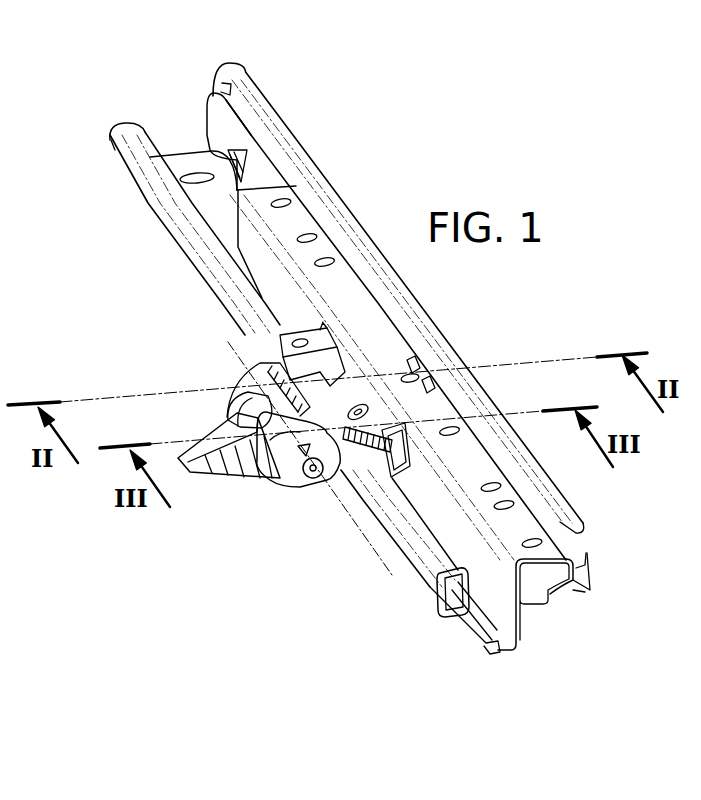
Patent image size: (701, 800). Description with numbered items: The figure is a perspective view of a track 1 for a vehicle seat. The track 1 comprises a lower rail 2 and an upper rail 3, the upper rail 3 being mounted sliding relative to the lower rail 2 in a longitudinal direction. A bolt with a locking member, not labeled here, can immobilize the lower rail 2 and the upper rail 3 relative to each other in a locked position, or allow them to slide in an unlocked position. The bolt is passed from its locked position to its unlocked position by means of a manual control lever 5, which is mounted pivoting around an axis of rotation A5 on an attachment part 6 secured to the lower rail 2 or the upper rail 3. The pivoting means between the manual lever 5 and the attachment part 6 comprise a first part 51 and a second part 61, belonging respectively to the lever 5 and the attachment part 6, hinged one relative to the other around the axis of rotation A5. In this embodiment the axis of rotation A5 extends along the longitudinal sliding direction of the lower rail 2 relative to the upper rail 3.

The track 1 is at (287, 92).
The lower rail 2 is at (534, 611).
The upper rail 3 is at (495, 593).
The manual control lever 5 is at (218, 482).
The first part 51 is at (297, 490).
The attachment part 6 is at (276, 337).
The second part 61 is at (317, 490).
The axis of rotation A5 is at (373, 557).